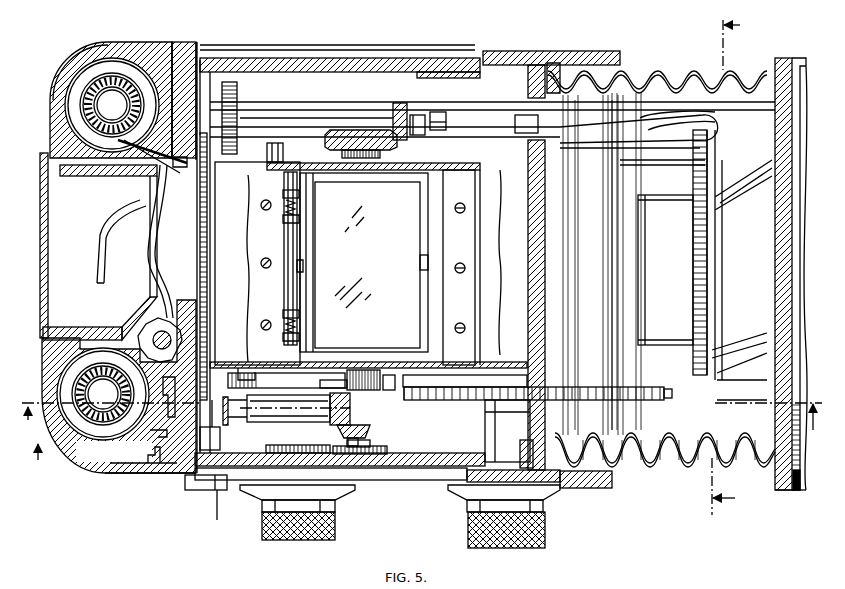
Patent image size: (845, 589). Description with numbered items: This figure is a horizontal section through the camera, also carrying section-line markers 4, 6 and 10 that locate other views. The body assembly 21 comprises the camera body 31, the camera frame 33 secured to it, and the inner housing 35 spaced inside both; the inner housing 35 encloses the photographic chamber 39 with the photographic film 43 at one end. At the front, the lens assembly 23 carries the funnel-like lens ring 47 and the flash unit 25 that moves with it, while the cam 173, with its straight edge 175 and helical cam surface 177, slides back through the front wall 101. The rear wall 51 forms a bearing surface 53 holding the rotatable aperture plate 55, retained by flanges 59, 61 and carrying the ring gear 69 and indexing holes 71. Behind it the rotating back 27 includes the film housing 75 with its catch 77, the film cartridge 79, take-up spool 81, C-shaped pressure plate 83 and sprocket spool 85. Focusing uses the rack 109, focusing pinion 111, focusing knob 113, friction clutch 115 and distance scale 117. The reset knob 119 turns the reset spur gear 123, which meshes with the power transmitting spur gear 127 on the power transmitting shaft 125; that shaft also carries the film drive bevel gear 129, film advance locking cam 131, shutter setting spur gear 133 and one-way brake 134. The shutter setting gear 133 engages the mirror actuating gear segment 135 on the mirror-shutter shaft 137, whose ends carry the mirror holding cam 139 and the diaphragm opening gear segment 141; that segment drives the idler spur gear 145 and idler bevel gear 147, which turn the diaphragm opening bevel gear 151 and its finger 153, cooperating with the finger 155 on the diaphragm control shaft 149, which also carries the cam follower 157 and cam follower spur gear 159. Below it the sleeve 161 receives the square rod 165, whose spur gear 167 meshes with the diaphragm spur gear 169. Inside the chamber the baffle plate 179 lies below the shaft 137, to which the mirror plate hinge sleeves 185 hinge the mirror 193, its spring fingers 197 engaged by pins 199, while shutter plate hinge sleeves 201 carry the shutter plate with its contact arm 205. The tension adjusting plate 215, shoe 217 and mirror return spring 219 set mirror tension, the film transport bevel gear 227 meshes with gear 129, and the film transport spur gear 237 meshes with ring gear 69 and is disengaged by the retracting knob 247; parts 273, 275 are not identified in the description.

The section line 4- 4 is at (425, 439).
The section line 6- 6 is at (732, 267).
The center line / spacer 10 is at (422, 435).
The body assembly 21 is at (387, 484).
The lens assembly 23 is at (775, 494).
The flash unit 25 is at (790, 494).
The rotating back 27 is at (75, 468).
The camera body 31 is at (294, 45).
The camera frame 33 is at (595, 65).
The inner housing 35 is at (452, 172).
The photographic chamber 39 is at (500, 287).
The photographic film 43 is at (150, 150).
The lens ring 47 is at (772, 152).
The rear wall 51 is at (195, 62).
The bearing surface 53 is at (198, 93).
The aperture plate 55 is at (172, 110).
The annular flange 59 is at (155, 448).
The annular flange 61 is at (158, 432).
The ring gear 69 is at (204, 132).
The indexing holes 71 is at (168, 410).
The film housing 75 is at (86, 48).
The catch 77 is at (145, 477).
The film cartridge 79 is at (90, 90).
The take-up spool 81 is at (97, 428).
The pressure plate 83 is at (150, 173).
The sprocket spool 85 is at (150, 327).
The front wall 101 is at (536, 70).
The rack 109 is at (672, 395).
The focusing pinion 111 is at (510, 413).
The focusing knob 113 is at (515, 544).
The friction clutch 115 is at (497, 440).
The distance scale 117 is at (565, 490).
The reset knob 119 is at (303, 538).
The reset spur gear 123 is at (300, 448).
The power transmitting shaft 125 is at (377, 441).
The power transmitting spur gear 127 is at (383, 452).
The film drive bevel gear 129 is at (370, 431).
The film advance locking cam 131 is at (387, 379).
The shutter setting spur gear 133 is at (353, 379).
The one-way brake 134 is at (352, 406).
The mirror actuating gear segment 135 is at (317, 376).
The mirror-shutter shaft 137 is at (278, 181).
The mirror holding cam 139 is at (350, 379).
The diaphragm opening spur gear segment 141 is at (264, 152).
The idler spur gear 145 is at (370, 160).
The idler bevel gear 147 is at (355, 132).
The diaphragm control shaft 149 is at (333, 120).
The diaphragm opening bevel gear 151 is at (396, 110).
The diaphragm opening finger 153 is at (425, 132).
The finger 155 is at (440, 135).
The cam follower 157 is at (522, 132).
The cam follower spur gear 159 is at (240, 92).
The sleeve 161 is at (324, 98).
The square rod 165 is at (590, 136).
The spur gear 167 is at (711, 76).
The diaphragm spur gear 169 is at (700, 290).
The cam 173 is at (736, 117).
The straight edge 175 is at (660, 116).
The curved cam surface 177 is at (623, 76).
The baffle plate 179 is at (457, 301).
The mirror plate hinge sleeves 185 is at (288, 240).
The mirror 193 is at (290, 229).
The spring fingers 197 is at (298, 300).
The pins 199 is at (300, 220).
The shutter plate hinge sleeves 201 is at (282, 276).
The contact arm 205 is at (421, 263).
The tension adjusting plate 215 is at (243, 364).
The shoe 217 is at (230, 420).
The mirror return spring 219 is at (242, 370).
The film transport bevel gear 227 is at (279, 408).
The film transport spur gear 237 is at (218, 520).
The retracting knob 247 is at (212, 484).
The bellows fold 273 is at (632, 87).
The top plate 275 is at (586, 50).